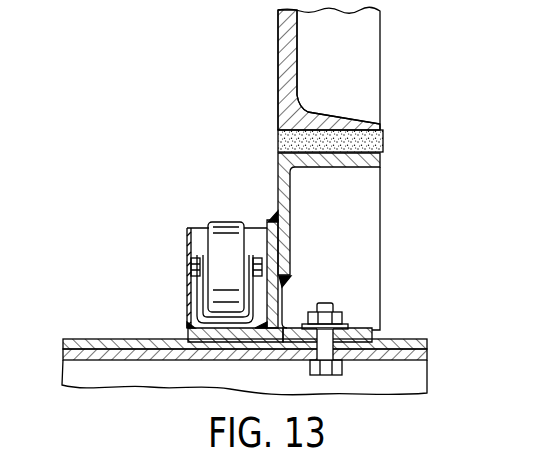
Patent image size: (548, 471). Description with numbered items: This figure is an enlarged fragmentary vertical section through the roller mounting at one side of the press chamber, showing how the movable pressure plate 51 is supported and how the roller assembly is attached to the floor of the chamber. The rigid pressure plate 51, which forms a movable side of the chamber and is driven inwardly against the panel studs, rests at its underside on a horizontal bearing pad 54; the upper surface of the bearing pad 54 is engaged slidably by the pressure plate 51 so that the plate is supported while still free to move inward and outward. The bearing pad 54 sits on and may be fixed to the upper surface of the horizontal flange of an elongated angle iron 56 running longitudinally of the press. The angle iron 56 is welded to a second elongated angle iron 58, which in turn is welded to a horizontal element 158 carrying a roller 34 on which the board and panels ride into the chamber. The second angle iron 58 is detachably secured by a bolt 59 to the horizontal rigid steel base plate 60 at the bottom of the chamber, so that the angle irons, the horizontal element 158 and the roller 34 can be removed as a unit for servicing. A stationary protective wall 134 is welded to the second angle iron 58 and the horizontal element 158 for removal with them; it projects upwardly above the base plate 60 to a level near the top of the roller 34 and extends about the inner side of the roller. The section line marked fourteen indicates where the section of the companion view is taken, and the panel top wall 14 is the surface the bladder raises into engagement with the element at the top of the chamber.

The pressure plate 51 is at (296, 50).
The bearing pad 54 is at (383, 141).
The angle iron 56 is at (292, 218).
The second angle iron 58 is at (372, 336).
The bolt 59 is at (334, 303).
The base plate 60 is at (92, 338).
The roller 34 is at (217, 222).
The protective wall 134 is at (187, 288).
The horizontal element 158 is at (200, 362).
The top wall 14 is at (128, 175).